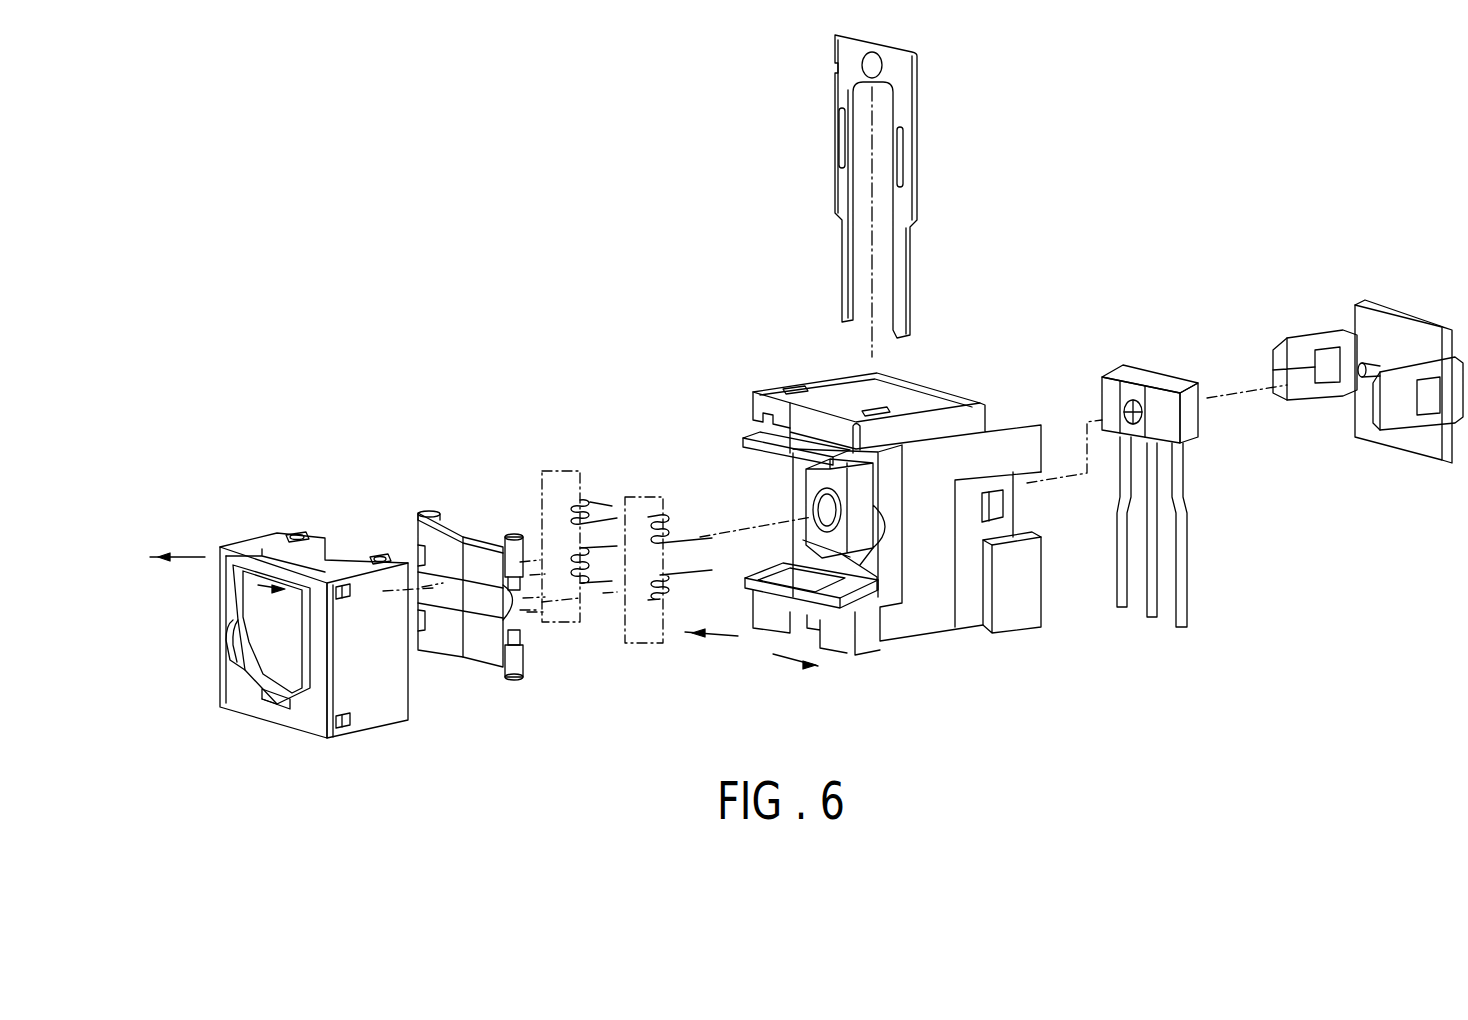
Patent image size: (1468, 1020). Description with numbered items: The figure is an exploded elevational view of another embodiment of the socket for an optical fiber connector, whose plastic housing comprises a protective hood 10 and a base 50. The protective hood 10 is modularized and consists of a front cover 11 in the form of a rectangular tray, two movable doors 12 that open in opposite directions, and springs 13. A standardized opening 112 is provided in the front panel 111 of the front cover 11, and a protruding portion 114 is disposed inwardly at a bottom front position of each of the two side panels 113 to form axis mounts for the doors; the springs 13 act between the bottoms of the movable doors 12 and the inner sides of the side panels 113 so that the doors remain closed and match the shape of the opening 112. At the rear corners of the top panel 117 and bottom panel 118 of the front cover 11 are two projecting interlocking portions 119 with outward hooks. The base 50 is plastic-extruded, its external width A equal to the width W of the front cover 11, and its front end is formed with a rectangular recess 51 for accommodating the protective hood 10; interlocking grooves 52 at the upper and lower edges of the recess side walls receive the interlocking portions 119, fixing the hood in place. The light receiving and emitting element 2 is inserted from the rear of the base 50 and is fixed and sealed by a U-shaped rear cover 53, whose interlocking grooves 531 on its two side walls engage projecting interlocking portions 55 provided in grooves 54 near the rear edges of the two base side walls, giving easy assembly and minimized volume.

The protective hood 10 is at (222, 487).
The front cover 11 is at (410, 697).
The front panel 111 is at (230, 693).
The opening 112 is at (263, 637).
The side panels 113 is at (377, 688).
The protruding portion 114 is at (350, 722).
The top panel 117 is at (350, 567).
The bottom panel 118 is at (287, 713).
The projecting interlocking portions 119 is at (380, 553).
The movable doors 12 is at (527, 650).
The springs 13 is at (672, 603).
The base 50 is at (1001, 409).
The rectangular recess 51 is at (780, 492).
The interlocking grooves 52 is at (798, 389).
The rear cover 53 is at (1347, 317).
The interlocking groove 531 is at (1332, 363).
The groove 54 is at (1028, 515).
The projecting interlocking portion 55 is at (990, 508).
The light receiving and emitting element 2 is at (1207, 430).